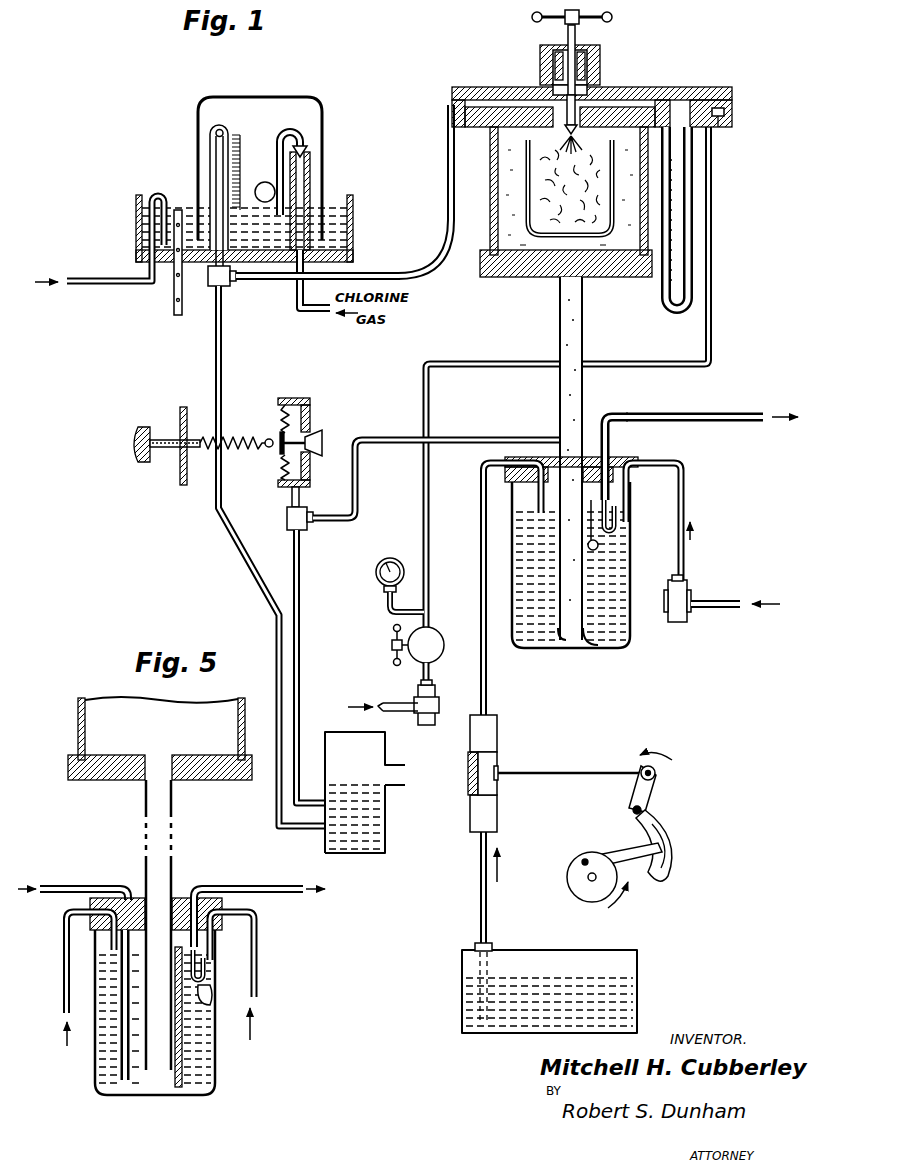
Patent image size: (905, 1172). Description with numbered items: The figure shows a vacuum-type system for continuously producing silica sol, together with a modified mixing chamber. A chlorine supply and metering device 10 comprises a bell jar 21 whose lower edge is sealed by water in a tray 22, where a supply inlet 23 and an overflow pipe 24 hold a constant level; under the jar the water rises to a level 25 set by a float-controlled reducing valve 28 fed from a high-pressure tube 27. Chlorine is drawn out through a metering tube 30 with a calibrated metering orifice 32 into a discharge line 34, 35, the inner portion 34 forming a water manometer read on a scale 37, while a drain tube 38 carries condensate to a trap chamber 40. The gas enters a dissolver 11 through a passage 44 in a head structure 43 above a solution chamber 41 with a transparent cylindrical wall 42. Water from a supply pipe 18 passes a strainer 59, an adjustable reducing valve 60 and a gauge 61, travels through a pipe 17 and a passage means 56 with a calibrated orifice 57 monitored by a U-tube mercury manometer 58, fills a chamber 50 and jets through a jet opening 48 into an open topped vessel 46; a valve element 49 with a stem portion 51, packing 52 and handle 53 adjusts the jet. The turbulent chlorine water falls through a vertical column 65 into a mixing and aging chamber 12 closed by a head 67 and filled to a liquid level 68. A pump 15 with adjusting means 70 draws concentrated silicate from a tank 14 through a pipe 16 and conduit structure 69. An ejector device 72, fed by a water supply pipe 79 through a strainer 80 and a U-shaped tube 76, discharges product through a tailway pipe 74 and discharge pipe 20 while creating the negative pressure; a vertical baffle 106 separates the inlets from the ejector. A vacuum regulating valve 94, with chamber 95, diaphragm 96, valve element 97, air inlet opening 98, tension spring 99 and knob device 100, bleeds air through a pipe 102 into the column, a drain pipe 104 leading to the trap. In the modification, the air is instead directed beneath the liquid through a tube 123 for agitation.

In FIG. 1, the chlorine supply and metering device 10 is at (198, 108).
In FIG. 1, the dissolver 11 is at (449, 158).
In FIG. 1, the mixing and aging chamber 12 is at (537, 579).
In FIG. 5, the mixing and aging chamber 12 is at (144, 1015).
In FIG. 1, the tank 14 is at (600, 952).
In FIG. 1, the pump 15 is at (468, 768).
In FIG. 1, the pipe 16 is at (480, 600).
In FIG. 5, the pipe 16 is at (63, 978).
In FIG. 1, the pipe 17 is at (502, 355).
In FIG. 1, the supply pipe 18 is at (398, 714).
In FIG. 1, the discharge pipe 20 is at (750, 412).
In FIG. 5, the discharge pipe 20 is at (274, 888).
In FIG. 1, the bell jar 21 is at (285, 97).
In FIG. 1, the tray 22 is at (353, 210).
In FIG. 1, the supply inlet 23 is at (160, 196).
In FIG. 1, the overflow pipe 24 is at (174, 306).
In FIG. 1, the water level 25 is at (311, 182).
In FIG. 1, the tube 27 is at (296, 312).
In FIG. 1, the float-controlled reducing valve 28 is at (303, 138).
In FIG. 1, the metering tube 30 is at (210, 140).
In FIG. 1, the metering orifice 32 is at (220, 128).
In FIG. 1, the outlet tube portion 34 is at (206, 290).
In FIG. 1, the discharge line 35 is at (380, 272).
In FIG. 1, the scale 37 is at (242, 135).
In FIG. 1, the drain tube 38 is at (240, 566).
In FIG. 1, the trap chamber 40 is at (386, 828).
In FIG. 1, the solution chamber 41 is at (490, 277).
In FIG. 5, the solution chamber 41 is at (85, 712).
In FIG. 1, the cylindrical wall 42 is at (490, 245).
In FIG. 5, the cylindrical wall 42 is at (78, 736).
In FIG. 1, the head structure 43 is at (452, 95).
In FIG. 1, the passage 44 is at (474, 87).
In FIG. 1, the open topped vessel 46 is at (612, 207).
In FIG. 1, the jet opening 48 is at (600, 107).
In FIG. 1, the valve element 49 is at (580, 105).
In FIG. 1, the chamber 50 is at (640, 100).
In FIG. 1, the stem portion 51 is at (566, 29).
In FIG. 1, the packing 52 is at (588, 48).
In FIG. 1, the handle 53 is at (592, 17).
In FIG. 1, the passage means 56 is at (685, 100).
In FIG. 1, the calibrated orifice 57 is at (732, 111).
In FIG. 1, the U-tube mercury manometer 58 is at (694, 240).
In FIG. 1, the strainer 59 is at (436, 694).
In FIG. 1, the adjustable reducing valve 60 is at (444, 647).
In FIG. 1, the gauge 61 is at (396, 556).
In FIG. 1, the vertical column 65 is at (584, 321).
In FIG. 5, the vertical column 65 is at (146, 797).
In FIG. 1, the head 67 is at (505, 460).
In FIG. 5, the head 67 is at (90, 906).
In FIG. 1, the liquid level 68 is at (516, 520).
In FIG. 5, the liquid level 68 is at (210, 948).
In FIG. 1, the conduit structure 69 is at (537, 494).
In FIG. 5, the conduit structure 69 is at (100, 936).
In FIG. 1, the means for varying delivery 70 is at (668, 812).
In FIG. 1, the ejector device 72 is at (616, 514).
In FIG. 5, the ejector device 72 is at (206, 969).
In FIG. 1, the tailway pipe 74 is at (598, 470).
In FIG. 5, the tailway pipe 74 is at (184, 898).
In FIG. 1, the U-shaped tube 76 is at (600, 548).
In FIG. 5, the U-shaped tube 76 is at (212, 1000).
In FIG. 1, the water supply pipe 79 is at (684, 495).
In FIG. 5, the water supply pipe 79 is at (258, 930).
In FIG. 1, the strainer 80 is at (687, 590).
In FIG. 1, the vacuum regulating valve 94 is at (308, 447).
In FIG. 1, the chamber 95 is at (308, 468).
In FIG. 1, the diaphragm 96 is at (282, 466).
In FIG. 1, the valve element 97 is at (326, 440).
In FIG. 1, the air inlet opening 98 is at (310, 428).
In FIG. 1, the tension spring 99 is at (245, 437).
In FIG. 1, the knob device 100 is at (135, 447).
In FIG. 1, the pipe 102 is at (377, 446).
In FIG. 5, the pipe 102 is at (80, 870).
In FIG. 1, the drain pipe 104 is at (301, 568).
In FIG. 1, the vertical baffle 106 is at (596, 648).
In FIG. 5, the vertical baffle 106 is at (183, 1085).
In FIG. 5, the tube 123 is at (120, 1043).